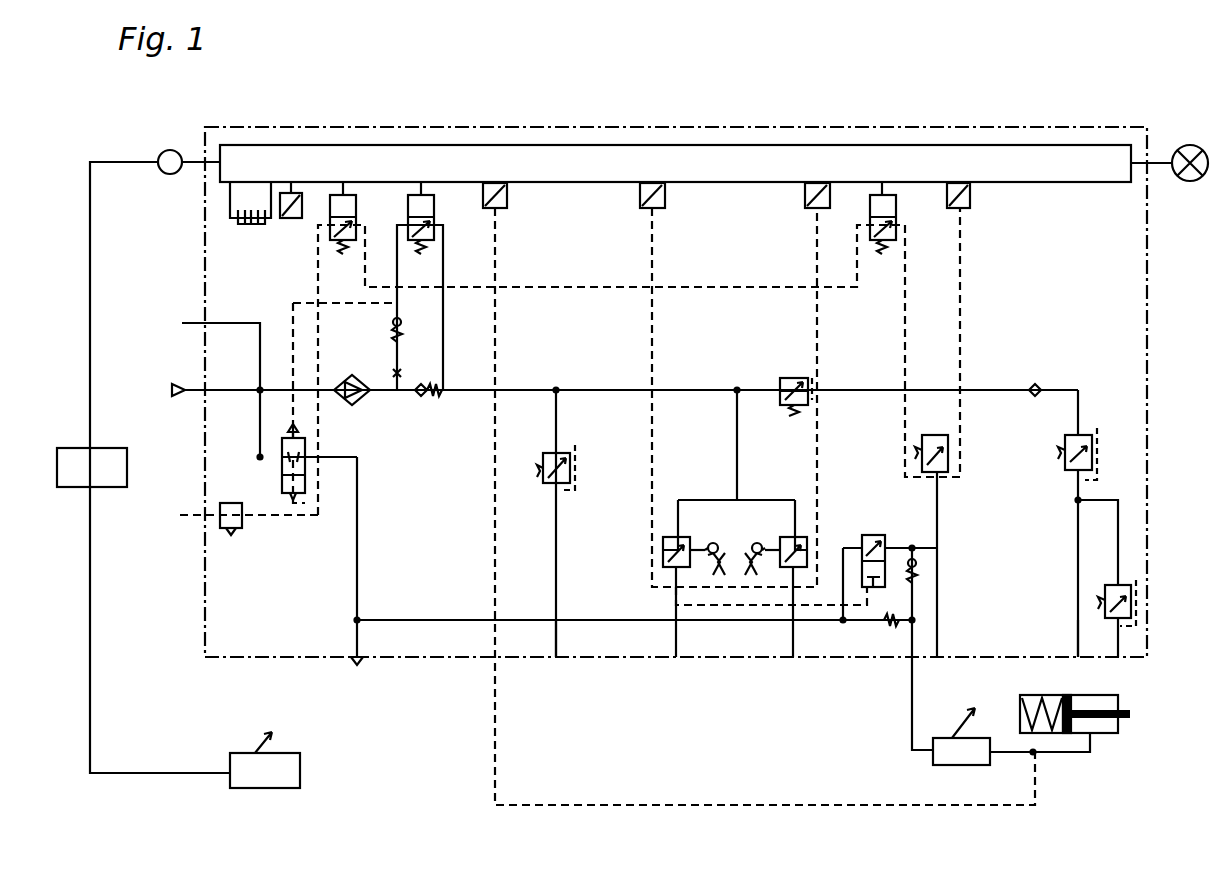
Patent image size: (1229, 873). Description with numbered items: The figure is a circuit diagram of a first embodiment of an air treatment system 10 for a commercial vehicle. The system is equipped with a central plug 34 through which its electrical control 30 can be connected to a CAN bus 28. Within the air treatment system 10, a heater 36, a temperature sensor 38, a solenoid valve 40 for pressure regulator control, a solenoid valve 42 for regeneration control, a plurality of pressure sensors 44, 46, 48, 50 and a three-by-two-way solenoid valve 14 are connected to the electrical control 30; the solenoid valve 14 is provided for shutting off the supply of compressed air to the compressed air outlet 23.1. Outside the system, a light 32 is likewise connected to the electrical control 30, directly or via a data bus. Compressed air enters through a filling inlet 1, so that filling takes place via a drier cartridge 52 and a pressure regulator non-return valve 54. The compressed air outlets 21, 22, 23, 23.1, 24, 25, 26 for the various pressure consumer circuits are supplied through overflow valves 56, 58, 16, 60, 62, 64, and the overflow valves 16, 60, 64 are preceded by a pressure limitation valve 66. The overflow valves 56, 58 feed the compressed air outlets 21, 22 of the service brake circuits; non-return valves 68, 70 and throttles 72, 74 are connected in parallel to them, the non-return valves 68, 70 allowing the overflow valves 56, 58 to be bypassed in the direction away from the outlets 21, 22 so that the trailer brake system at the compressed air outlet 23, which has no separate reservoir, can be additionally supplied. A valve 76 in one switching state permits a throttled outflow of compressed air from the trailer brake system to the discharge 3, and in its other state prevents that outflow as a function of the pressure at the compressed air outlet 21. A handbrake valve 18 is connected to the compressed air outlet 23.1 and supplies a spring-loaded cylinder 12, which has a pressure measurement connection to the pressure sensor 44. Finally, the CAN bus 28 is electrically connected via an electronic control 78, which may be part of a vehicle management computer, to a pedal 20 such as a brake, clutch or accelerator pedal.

The filling inlet 1 is at (178, 405).
The discharge 3 is at (360, 668).
The air treatment system 10 is at (712, 119).
The spring-loaded cylinder 12 is at (1108, 735).
The 3/2-way solenoid valve 14 is at (898, 214).
The overflow valve 16 is at (920, 470).
The handbrake valve 18 is at (928, 770).
The pedal 20 is at (260, 748).
The compressed air outlet 21 is at (672, 660).
The compressed air outlet 22 is at (790, 660).
The compressed air outlet 23 is at (938, 660).
The compressed air outlet 23.1 is at (905, 665).
The compressed air outlet 24 is at (1073, 663).
The compressed air outlet 25 is at (556, 660).
The compressed air outlet 26 is at (1120, 660).
The CAN bus 28 is at (90, 258).
The electrical control 30 is at (577, 182).
The light 32 is at (1190, 181).
The central plug 34 is at (165, 150).
The heater 36 is at (240, 228).
The temperature sensor 38 is at (288, 222).
The solenoid valve 40 is at (358, 210).
The solenoid valve 42 is at (436, 212).
The pressure sensor 44 is at (505, 214).
The pressure sensor 46 is at (663, 212).
The pressure sensor 48 is at (805, 212).
The pressure sensor 50 is at (970, 212).
The drier cartridge 52 is at (362, 405).
The pressure regulator non-return valve 54 is at (424, 405).
The overflow valve 56 is at (665, 520).
The overflow valve 58 is at (805, 520).
The overflow valve 60 is at (1062, 475).
The overflow valve 62 is at (540, 488).
The overflow valve 64 is at (1112, 578).
The pressure limitation valve 66 is at (777, 375).
The non-return valve 68 is at (713, 540).
The non-return valve 70 is at (757, 540).
The throttle 72 is at (716, 578).
The throttle 74 is at (752, 578).
The valve 76 is at (858, 526).
The electronic control 78 is at (105, 445).